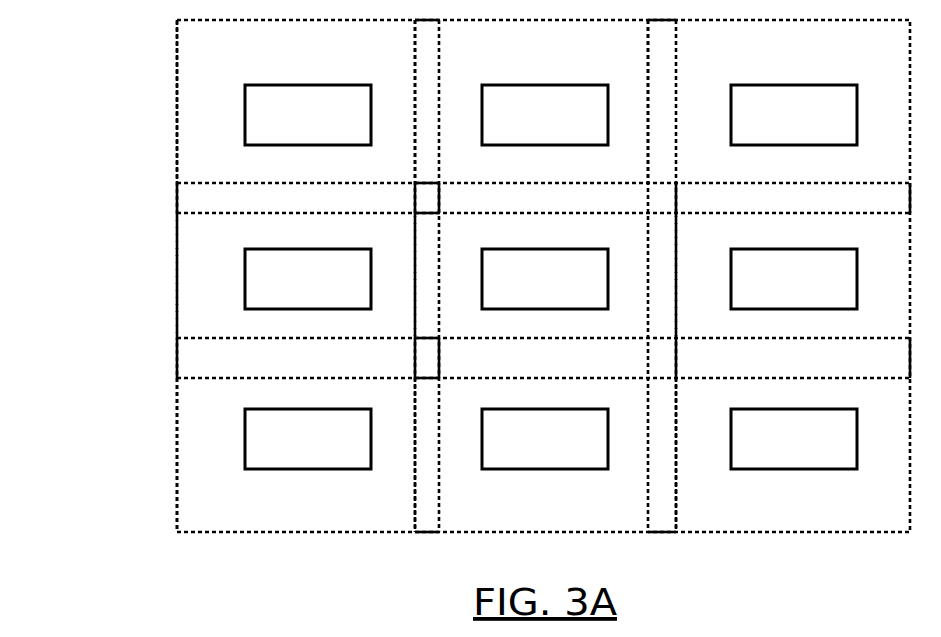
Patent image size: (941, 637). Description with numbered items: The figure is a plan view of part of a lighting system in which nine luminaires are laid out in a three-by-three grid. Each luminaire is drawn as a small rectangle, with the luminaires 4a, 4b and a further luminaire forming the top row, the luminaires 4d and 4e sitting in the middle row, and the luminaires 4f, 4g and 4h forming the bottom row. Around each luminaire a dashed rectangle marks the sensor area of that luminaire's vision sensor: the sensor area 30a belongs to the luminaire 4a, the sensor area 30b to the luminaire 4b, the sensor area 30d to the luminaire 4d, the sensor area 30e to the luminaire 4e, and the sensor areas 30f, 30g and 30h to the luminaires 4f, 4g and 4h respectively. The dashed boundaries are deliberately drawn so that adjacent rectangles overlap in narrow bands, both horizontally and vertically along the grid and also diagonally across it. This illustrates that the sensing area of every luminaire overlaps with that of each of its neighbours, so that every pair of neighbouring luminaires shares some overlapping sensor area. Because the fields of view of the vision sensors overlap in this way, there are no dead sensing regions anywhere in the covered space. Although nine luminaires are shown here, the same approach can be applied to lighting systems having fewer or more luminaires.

The luminaire 4a is at (308, 115).
The luminaire 4b is at (545, 115).
The luminaire 4d is at (545, 279).
The luminaire 4e is at (794, 279).
The luminaire 4f is at (308, 439).
The luminaire 4g is at (545, 439).
The luminaire 4h is at (794, 439).
The sensor area 30a is at (177, 160).
The sensor area 30b is at (415, 160).
The sensor area 30d is at (415, 318).
The sensor area 30e is at (676, 316).
The sensor area 30f is at (177, 490).
The sensor area 30g is at (415, 493).
The sensor area 30h is at (676, 491).